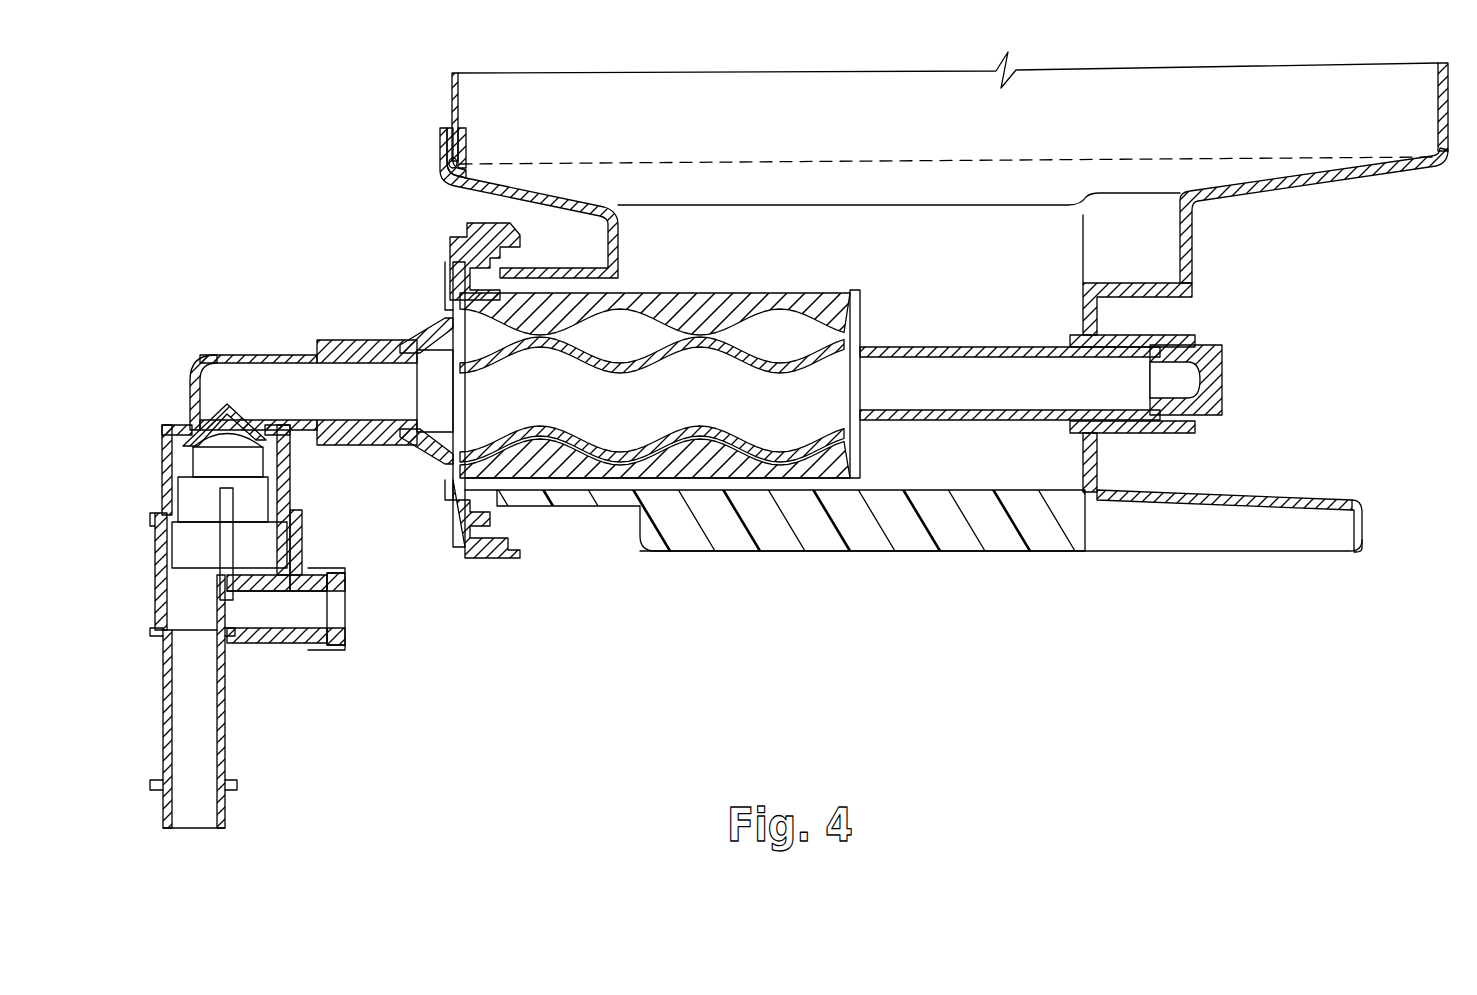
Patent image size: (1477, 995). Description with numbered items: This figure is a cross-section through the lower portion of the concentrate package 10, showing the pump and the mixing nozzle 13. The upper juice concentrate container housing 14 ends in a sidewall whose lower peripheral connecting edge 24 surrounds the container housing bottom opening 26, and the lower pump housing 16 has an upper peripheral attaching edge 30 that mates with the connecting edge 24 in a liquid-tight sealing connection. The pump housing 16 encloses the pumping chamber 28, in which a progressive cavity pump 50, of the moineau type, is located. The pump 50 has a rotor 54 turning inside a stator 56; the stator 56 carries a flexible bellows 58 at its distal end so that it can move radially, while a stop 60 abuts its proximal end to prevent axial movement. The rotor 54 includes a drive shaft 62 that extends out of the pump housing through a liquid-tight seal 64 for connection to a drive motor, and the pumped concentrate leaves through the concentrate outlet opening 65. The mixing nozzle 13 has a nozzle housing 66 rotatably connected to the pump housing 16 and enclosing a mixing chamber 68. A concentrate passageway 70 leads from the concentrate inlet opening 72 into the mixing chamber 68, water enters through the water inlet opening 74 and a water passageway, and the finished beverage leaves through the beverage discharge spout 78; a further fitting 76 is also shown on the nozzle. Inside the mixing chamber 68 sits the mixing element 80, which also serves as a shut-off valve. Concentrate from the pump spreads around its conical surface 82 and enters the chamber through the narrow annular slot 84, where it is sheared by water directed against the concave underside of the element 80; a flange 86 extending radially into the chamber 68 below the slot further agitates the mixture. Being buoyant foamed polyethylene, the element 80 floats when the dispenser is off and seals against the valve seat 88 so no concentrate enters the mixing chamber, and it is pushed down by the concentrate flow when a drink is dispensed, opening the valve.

The concentrate package 10 is at (368, 99).
The mixing nozzle 13 is at (290, 294).
The container housing 14 is at (452, 96).
The pump housing 16 is at (1194, 284).
The connecting edge 24 is at (458, 143).
The container housing bottom opening 26 is at (466, 162).
The pumping chamber 28 is at (962, 294).
The attaching edge 30 is at (440, 167).
The progressive cavity pump 50 is at (662, 346).
The rotor 54 is at (757, 363).
The stator 56 is at (746, 291).
The flexible bellows 58 is at (453, 499).
The stop 60 is at (856, 478).
The drive shaft 62 is at (1224, 383).
The liquid-tight seal 64 is at (1002, 419).
The concentrate outlet opening 65 is at (446, 407).
The nozzle housing 66 is at (155, 572).
The mixing chamber 68 is at (191, 508).
The concentrate passageway 70 is at (305, 406).
The concentrate inlet opening 72 is at (415, 366).
The water inlet opening 74 is at (345, 645).
The fitting 76 is at (269, 621).
The beverage discharge spout 78 is at (228, 823).
The mixing element 80 is at (185, 429).
The conical surface 82 is at (192, 404).
The annular slot 84 is at (283, 447).
The flange 86 is at (266, 468).
The valve seat 88 is at (258, 437).